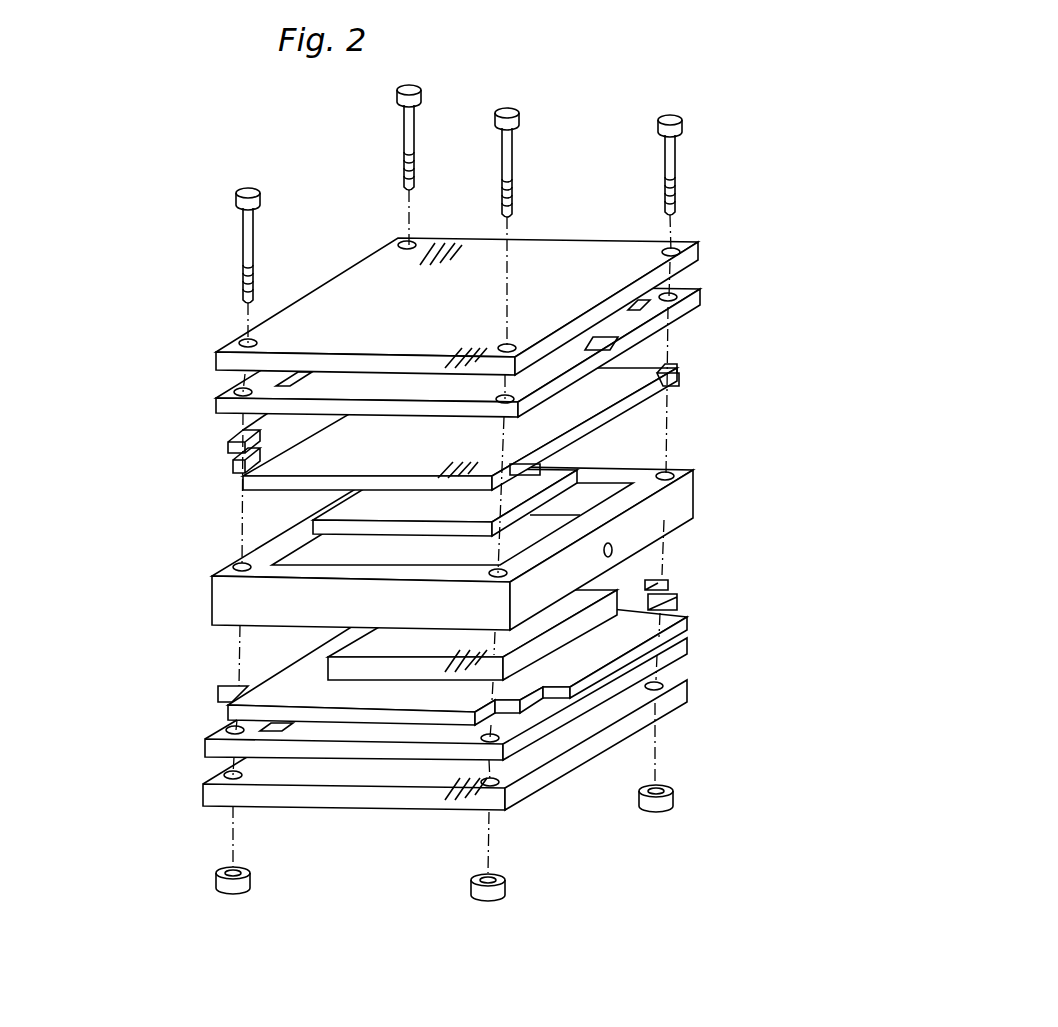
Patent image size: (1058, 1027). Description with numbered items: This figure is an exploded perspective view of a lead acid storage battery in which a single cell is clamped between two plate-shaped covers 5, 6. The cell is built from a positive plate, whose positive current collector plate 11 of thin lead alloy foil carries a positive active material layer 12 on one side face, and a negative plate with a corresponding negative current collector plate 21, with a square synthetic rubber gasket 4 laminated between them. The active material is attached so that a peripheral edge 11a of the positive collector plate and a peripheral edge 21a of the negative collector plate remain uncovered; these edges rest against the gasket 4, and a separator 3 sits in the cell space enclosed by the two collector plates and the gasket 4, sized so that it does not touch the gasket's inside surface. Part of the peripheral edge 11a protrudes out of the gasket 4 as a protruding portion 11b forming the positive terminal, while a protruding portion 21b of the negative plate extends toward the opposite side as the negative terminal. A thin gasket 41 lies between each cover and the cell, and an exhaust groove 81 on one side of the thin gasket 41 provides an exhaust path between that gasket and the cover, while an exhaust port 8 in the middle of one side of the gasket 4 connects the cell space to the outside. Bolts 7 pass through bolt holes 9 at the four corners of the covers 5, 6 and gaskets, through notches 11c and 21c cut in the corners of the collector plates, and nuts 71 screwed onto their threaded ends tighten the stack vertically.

The separator 3 is at (347, 508).
The gasket 4 is at (688, 500).
The cover 5 is at (613, 718).
The cover 6 is at (633, 268).
The bolt 7 is at (674, 163).
The exhaust port 8 is at (616, 549).
The bolt hole 9 is at (403, 238).
The positive current collector plate 11 is at (470, 652).
The peripheral edge 11a is at (652, 602).
The protruding portion 11b is at (673, 660).
The notch 11c is at (669, 580).
The positive active material layer 12 is at (583, 592).
The negative current collector plate 21 is at (483, 426).
The peripheral edge 21a is at (292, 468).
The protruding portion 21b is at (238, 434).
The notch 21c is at (237, 468).
The thin gasket 41 is at (685, 303).
The nut 71 is at (666, 803).
The exhaust groove 81 is at (663, 326).